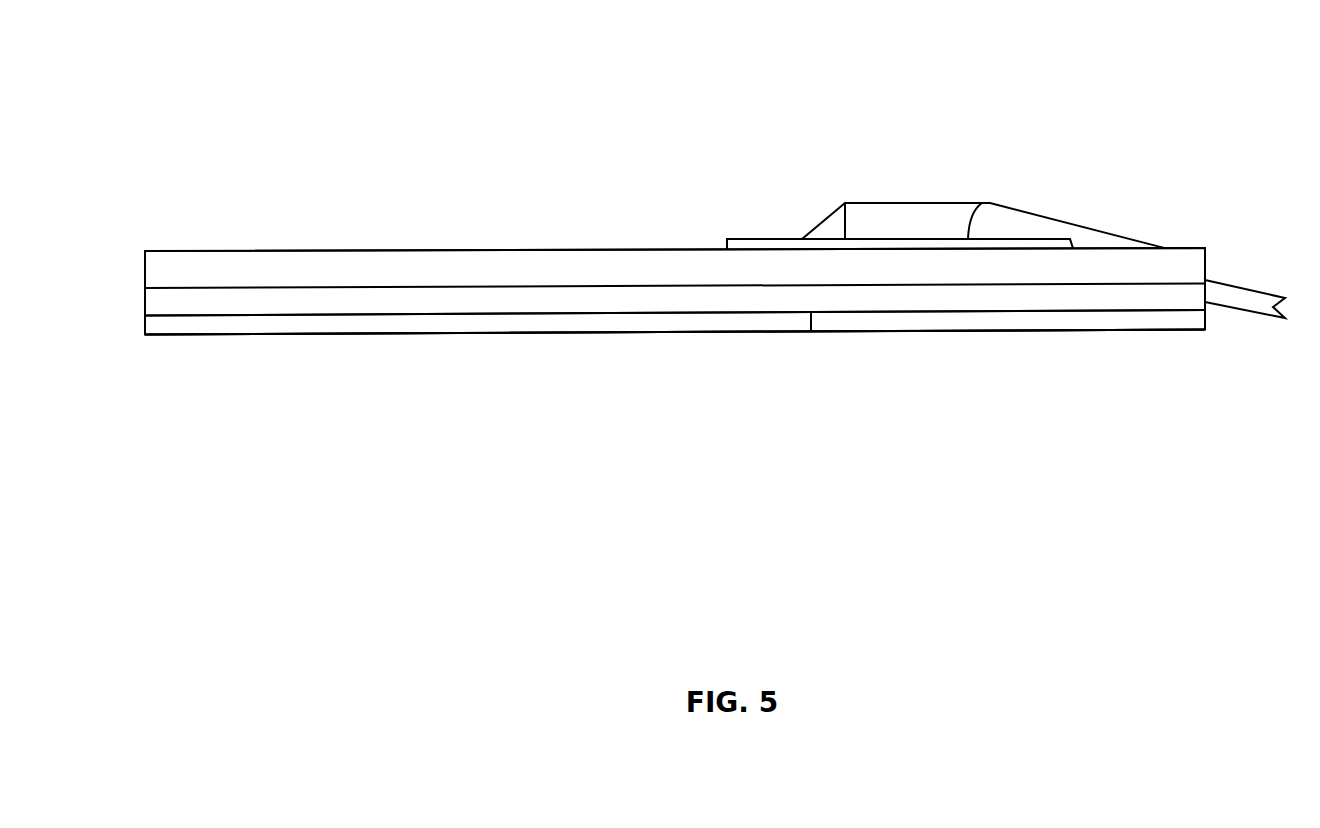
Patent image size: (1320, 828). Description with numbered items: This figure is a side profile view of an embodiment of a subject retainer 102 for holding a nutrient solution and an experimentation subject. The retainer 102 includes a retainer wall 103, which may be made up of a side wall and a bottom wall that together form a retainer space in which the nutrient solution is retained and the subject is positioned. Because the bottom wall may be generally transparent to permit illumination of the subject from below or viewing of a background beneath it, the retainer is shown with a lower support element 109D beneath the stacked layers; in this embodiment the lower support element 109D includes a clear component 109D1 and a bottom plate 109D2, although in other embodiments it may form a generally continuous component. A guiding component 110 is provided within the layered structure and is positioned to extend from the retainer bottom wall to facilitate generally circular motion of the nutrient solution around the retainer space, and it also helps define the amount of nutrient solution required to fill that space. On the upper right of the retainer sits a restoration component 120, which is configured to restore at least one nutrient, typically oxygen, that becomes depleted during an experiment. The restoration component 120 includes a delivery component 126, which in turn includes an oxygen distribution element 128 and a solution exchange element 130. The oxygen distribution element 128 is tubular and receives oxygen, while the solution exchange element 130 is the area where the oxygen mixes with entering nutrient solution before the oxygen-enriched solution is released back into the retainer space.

The retainer 102 is at (453, 167).
The retainer wall 103 is at (126, 242).
The guiding component 110 is at (254, 313).
The lower support element 109D is at (728, 345).
The clear component 109D1 is at (495, 338).
The bottom plate 109D2 is at (901, 336).
The restoration component 120 is at (1145, 215).
The delivery component 126 is at (1028, 217).
The oxygen distribution element 128 is at (1255, 271).
The solution exchange element 130 is at (919, 213).